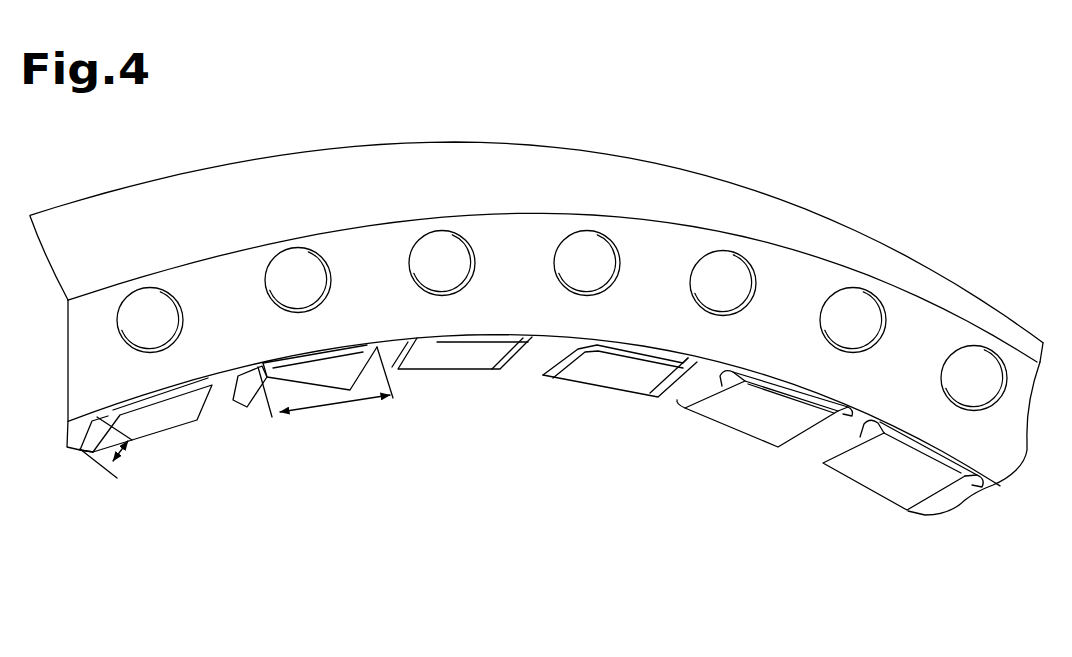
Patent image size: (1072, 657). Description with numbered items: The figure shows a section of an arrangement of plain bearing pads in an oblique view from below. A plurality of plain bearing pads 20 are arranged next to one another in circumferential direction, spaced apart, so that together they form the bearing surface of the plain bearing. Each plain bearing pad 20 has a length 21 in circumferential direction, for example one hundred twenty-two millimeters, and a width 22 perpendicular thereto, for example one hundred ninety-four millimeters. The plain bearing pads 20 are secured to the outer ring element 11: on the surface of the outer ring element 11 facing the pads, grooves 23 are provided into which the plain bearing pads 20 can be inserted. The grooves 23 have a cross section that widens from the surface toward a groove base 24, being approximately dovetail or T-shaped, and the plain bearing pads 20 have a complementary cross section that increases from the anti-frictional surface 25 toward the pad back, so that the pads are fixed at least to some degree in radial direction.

The outer ring element 11 is at (782, 198).
The plain bearing pad 20 is at (714, 427).
The length 21 is at (315, 407).
The width 22 is at (129, 468).
The groove 23 is at (469, 358).
The groove base 24 is at (613, 363).
The anti-frictional surface 25 is at (753, 422).